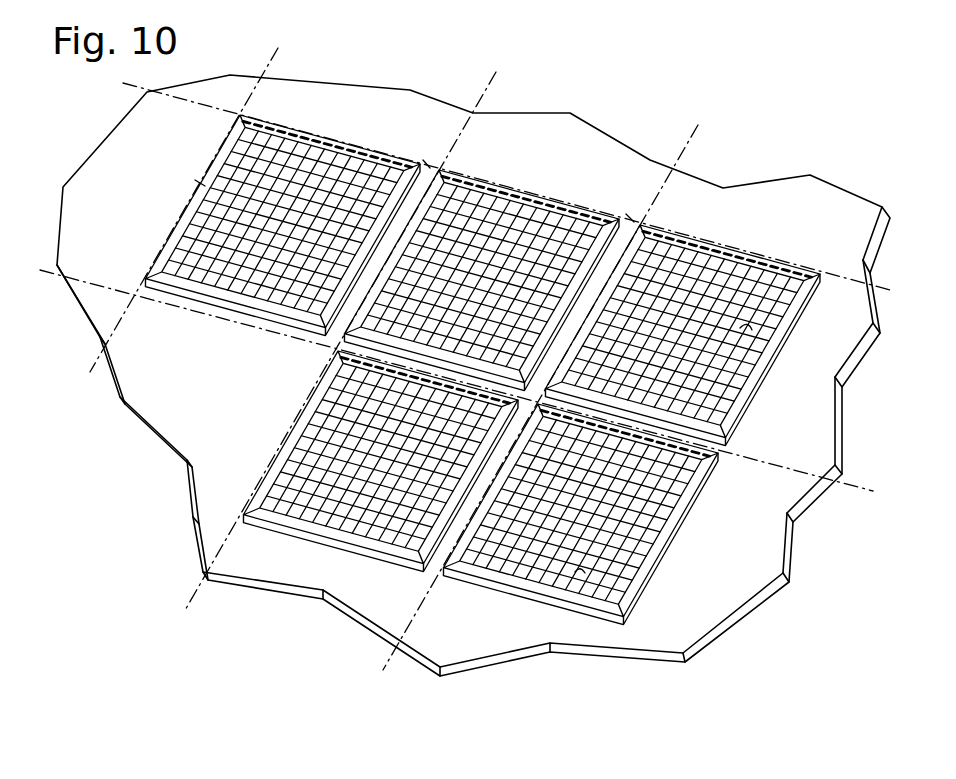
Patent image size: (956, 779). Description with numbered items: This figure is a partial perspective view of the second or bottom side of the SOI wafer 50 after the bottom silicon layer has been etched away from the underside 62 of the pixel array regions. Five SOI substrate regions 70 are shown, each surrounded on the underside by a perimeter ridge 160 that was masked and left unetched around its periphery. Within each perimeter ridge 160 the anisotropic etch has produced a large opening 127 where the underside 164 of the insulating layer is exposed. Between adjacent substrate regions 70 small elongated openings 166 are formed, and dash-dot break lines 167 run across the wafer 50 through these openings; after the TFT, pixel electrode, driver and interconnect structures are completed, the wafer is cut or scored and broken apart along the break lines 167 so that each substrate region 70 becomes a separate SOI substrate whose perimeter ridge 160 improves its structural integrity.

The SOI wafer 50 is at (283, 82).
The underside 62 is at (197, 181).
The SOI substrate region 70 is at (345, 168).
The large opening 127 is at (270, 132).
The perimeter ridge 160 is at (523, 190).
The underside of insulating layer 164 is at (90, 250).
The small elongated opening 166 is at (425, 161).
The break line 167 is at (95, 282).